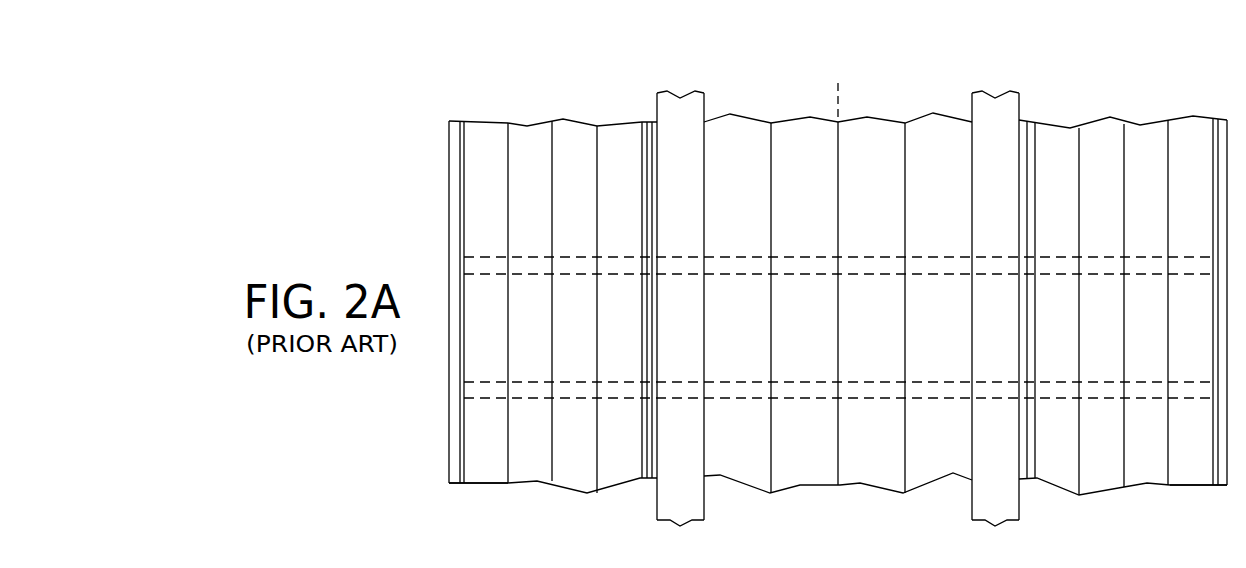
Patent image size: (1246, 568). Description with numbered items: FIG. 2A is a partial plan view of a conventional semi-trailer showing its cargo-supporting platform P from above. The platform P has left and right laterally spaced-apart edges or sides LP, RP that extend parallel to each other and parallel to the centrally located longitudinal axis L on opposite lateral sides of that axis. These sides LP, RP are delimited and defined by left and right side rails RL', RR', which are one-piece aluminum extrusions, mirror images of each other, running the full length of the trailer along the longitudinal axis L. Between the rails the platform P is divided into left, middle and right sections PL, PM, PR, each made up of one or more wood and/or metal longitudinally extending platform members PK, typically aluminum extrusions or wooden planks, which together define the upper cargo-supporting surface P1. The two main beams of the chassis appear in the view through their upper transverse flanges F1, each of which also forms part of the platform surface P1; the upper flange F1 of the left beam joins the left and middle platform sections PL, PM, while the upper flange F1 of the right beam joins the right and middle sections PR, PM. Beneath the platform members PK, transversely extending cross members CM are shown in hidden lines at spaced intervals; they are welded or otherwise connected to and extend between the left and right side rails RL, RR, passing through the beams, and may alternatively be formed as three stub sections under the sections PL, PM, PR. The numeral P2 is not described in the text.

The left section PL is at (657, 90).
The middle section PM is at (972, 90).
The right section PR is at (1227, 117).
The left lateral side LP is at (470, 126).
The right lateral side RP is at (1136, 129).
The cargo-supporting platform P is at (743, 128).
The longitudinal axis L is at (840, 97).
The upper cargo-supporting surface P1 is at (742, 218).
The second pedestal P2 is at (968, 511).
The upper transverse flange F1 is at (680, 524).
The cross member CM is at (826, 268).
The platform member PK is at (1140, 515).
The left side rail RL' is at (478, 333).
The right side rail RR' is at (1198, 331).
The left side rail RL is at (478, 525).
The right side rail RR is at (1191, 526).